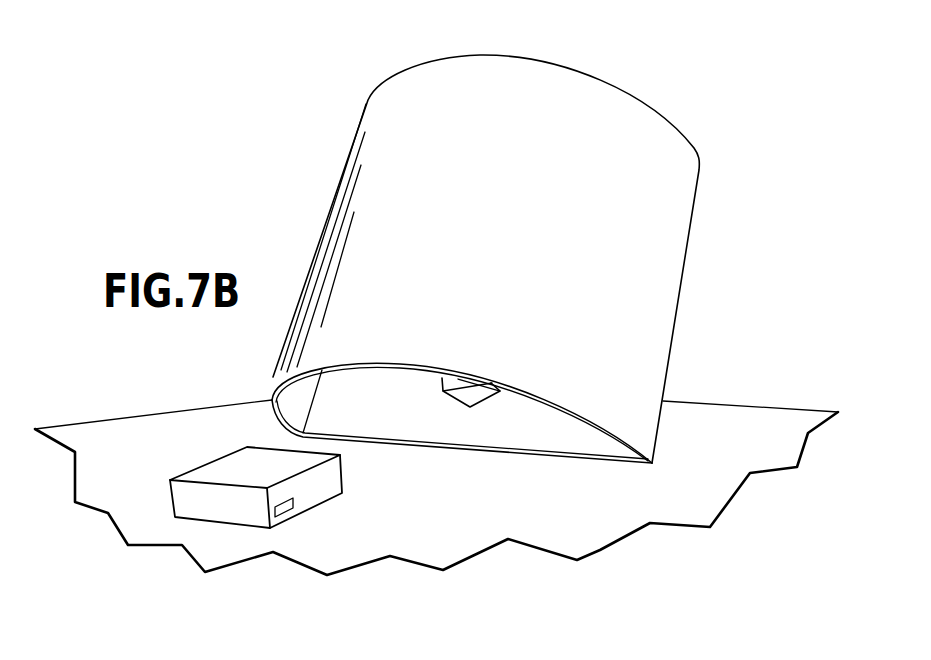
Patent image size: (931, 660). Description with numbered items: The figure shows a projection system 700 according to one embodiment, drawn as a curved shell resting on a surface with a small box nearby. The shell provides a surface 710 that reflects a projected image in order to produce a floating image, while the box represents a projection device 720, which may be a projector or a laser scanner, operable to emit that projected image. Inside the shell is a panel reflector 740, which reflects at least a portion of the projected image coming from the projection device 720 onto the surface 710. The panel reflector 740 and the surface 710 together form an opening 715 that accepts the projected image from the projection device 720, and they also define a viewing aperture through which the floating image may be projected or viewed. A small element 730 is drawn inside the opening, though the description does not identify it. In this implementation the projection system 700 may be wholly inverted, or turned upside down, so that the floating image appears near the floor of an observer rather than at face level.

The projection system 700 is at (298, 181).
The surface 710 is at (573, 66).
The opening 715 is at (560, 437).
The projection device 720 is at (343, 474).
The sensor block 730 is at (468, 412).
The panel reflector 740 is at (403, 412).